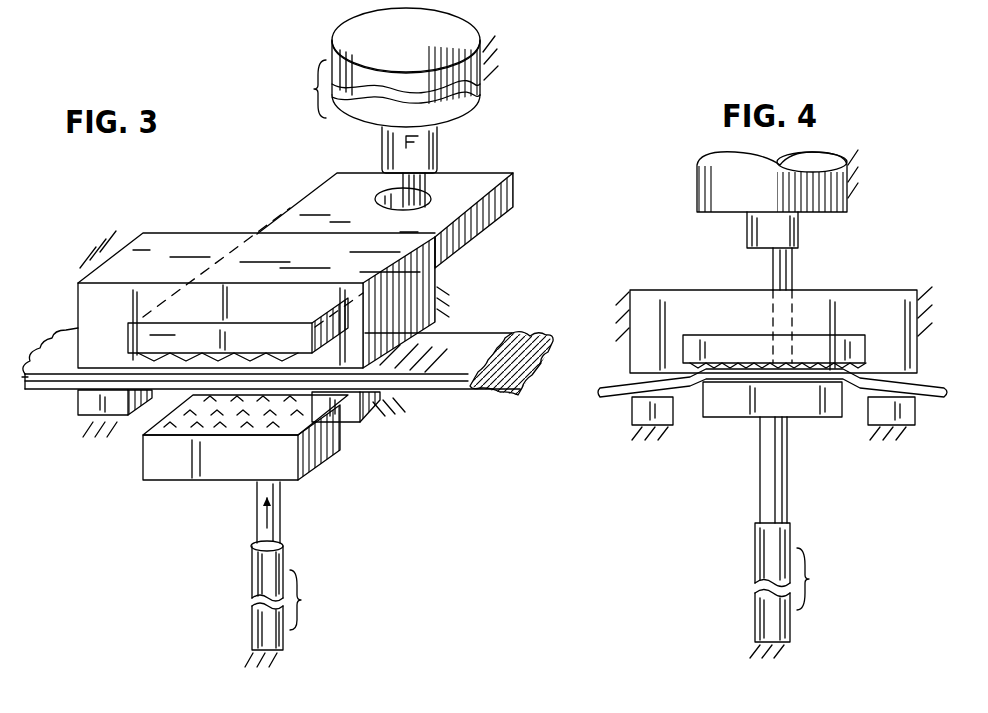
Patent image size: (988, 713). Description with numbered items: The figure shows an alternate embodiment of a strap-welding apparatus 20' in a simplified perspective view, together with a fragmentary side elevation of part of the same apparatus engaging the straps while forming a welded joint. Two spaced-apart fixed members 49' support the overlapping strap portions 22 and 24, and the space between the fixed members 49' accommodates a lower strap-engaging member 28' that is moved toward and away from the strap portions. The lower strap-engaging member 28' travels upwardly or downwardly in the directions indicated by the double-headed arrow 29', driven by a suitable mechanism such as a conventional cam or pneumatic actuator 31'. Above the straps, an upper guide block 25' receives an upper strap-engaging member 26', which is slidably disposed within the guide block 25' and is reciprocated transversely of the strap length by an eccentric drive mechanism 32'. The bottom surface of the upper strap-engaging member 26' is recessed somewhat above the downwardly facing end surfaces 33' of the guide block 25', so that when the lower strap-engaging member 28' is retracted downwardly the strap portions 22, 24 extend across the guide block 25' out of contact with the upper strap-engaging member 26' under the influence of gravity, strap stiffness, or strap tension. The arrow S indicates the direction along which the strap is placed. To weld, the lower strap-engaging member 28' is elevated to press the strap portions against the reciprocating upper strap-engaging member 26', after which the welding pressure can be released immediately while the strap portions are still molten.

In FIG. 3, the apparatus 20' is at (250, 156).
In FIG. 3, the strap portion 22 is at (465, 340).
In FIG. 4, the strap portion 22 is at (930, 372).
In FIG. 3, the strap portion 24 is at (528, 343).
In FIG. 4, the strap portion 24 is at (923, 403).
In FIG. 3, the upper guide block 25' is at (295, 270).
In FIG. 4, the upper guide block 25' is at (774, 308).
In FIG. 3, the upper strap-engaging member 26' is at (191, 328).
In FIG. 4, the upper strap-engaging member 26' is at (774, 313).
In FIG. 3, the lower strap-engaging member 28' is at (280, 442).
In FIG. 4, the lower strap-engaging member 28' is at (766, 426).
In FIG. 3, the double-headed arrow 29' is at (319, 512).
In FIG. 4, the double-headed arrow 29' is at (773, 470).
In FIG. 3, the cam or pneumatic actuator 31' is at (318, 599).
In FIG. 4, the cam or pneumatic actuator 31' is at (743, 584).
In FIG. 3, the eccentric drive mechanism 32' is at (423, 107).
In FIG. 4, the eccentric drive mechanism 32' is at (758, 256).
In FIG. 4, the downwardly facing end surfaces 33' is at (744, 313).
In FIG. 3, the fixed members 49' is at (248, 442).
In FIG. 4, the fixed members 49' is at (734, 433).
In FIG. 3, the direction of strip insertion S is at (526, 327).